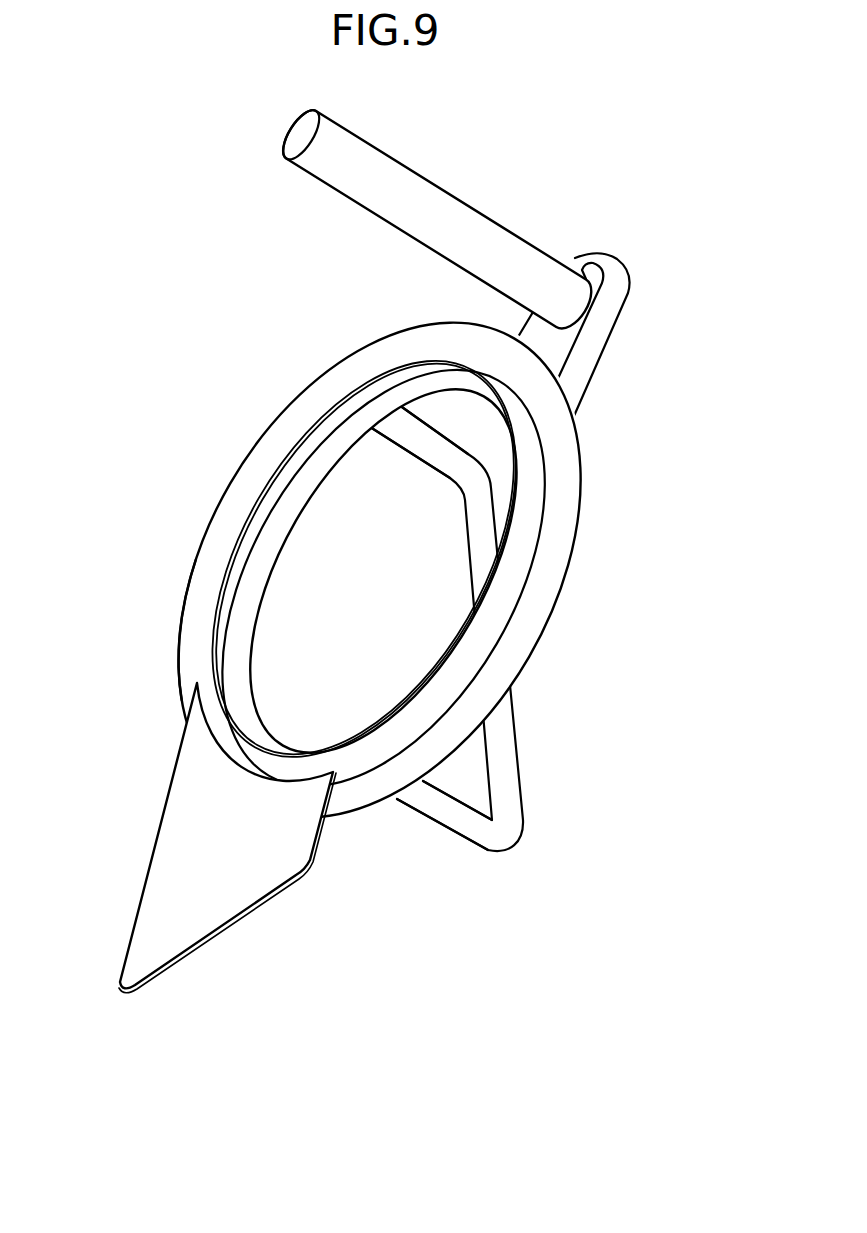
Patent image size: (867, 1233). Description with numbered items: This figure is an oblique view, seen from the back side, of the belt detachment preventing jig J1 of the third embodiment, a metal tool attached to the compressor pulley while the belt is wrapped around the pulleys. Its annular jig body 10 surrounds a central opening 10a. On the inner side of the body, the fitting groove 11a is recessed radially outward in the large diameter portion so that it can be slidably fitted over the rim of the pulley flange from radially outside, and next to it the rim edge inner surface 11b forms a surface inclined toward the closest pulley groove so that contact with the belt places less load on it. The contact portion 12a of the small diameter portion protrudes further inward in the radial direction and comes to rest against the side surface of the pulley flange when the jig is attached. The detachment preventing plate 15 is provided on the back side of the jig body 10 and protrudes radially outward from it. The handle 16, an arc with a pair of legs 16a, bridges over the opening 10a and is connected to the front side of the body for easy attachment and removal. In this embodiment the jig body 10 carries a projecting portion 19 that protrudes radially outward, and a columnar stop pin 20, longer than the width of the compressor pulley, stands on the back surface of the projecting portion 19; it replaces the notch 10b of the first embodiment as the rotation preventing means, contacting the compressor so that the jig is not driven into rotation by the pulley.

The belt detachment preventing jig J1 is at (136, 338).
The jig body 10 is at (570, 493).
The opening 10a is at (370, 661).
The notch 10b is at (179, 622).
The fitting groove 11a is at (332, 422).
The rim edge inner surface 11b is at (268, 447).
The contact portion 12a is at (383, 387).
The detachment preventing plate 15 is at (168, 875).
The handle 16 is at (527, 744).
The legs 16a is at (418, 440).
The projecting portion 19 is at (607, 323).
The stop pin 20 is at (450, 212).